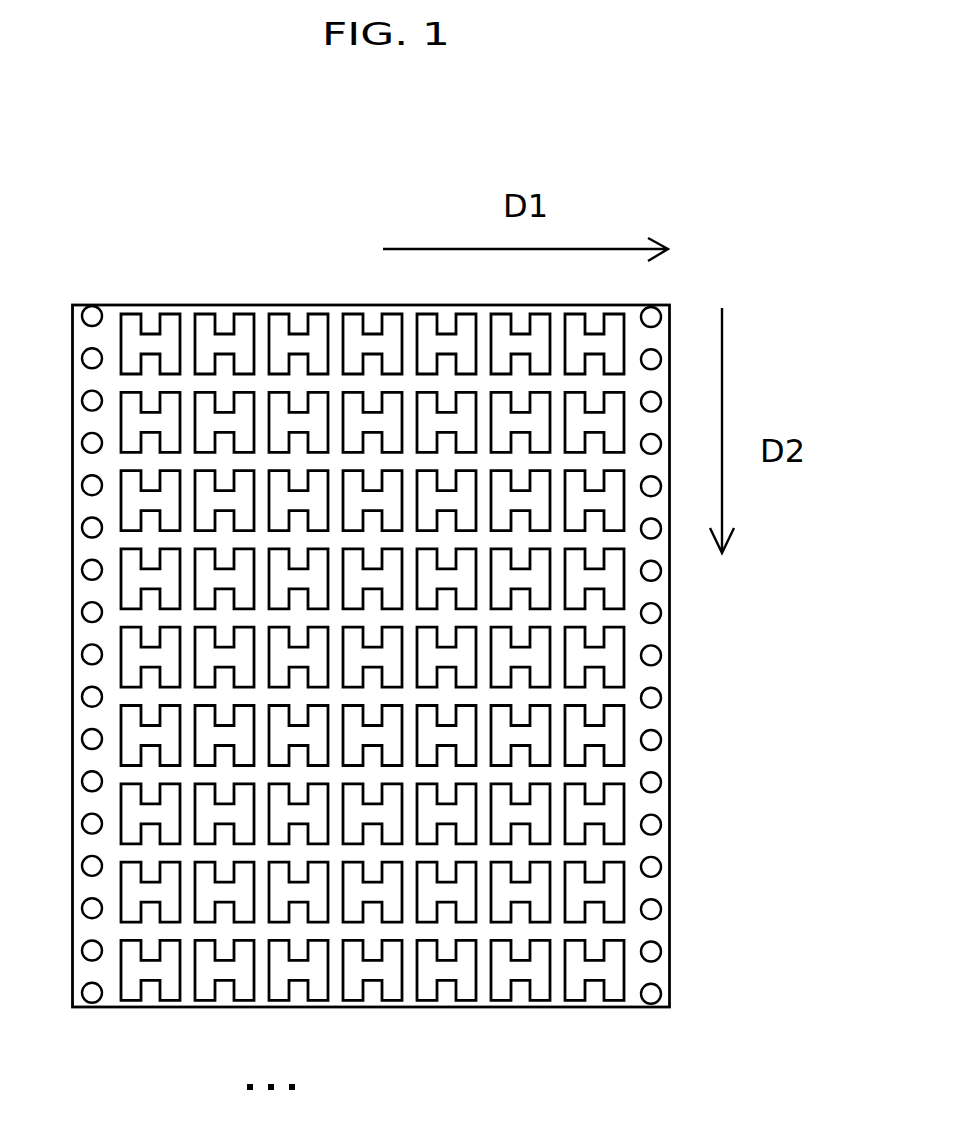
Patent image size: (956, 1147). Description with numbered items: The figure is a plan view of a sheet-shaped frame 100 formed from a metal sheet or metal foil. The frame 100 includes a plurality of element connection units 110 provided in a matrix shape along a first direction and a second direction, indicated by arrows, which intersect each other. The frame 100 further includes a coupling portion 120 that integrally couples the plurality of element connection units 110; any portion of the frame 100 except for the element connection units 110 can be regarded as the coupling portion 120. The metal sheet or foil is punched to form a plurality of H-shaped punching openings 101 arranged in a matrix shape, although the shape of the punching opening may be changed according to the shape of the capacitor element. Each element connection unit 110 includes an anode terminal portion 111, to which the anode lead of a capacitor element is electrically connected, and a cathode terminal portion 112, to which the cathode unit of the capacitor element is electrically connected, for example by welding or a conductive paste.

The frame 100 is at (367, 178).
The H-shaped punching opening 101 is at (136, 972).
The element connection unit 110 is at (227, 193).
The anode terminal portion 111 is at (152, 322).
The cathode terminal portion 112 is at (152, 362).
The coupling portion 120 is at (610, 933).